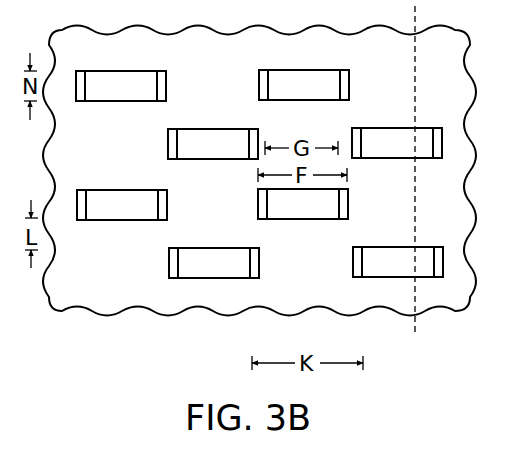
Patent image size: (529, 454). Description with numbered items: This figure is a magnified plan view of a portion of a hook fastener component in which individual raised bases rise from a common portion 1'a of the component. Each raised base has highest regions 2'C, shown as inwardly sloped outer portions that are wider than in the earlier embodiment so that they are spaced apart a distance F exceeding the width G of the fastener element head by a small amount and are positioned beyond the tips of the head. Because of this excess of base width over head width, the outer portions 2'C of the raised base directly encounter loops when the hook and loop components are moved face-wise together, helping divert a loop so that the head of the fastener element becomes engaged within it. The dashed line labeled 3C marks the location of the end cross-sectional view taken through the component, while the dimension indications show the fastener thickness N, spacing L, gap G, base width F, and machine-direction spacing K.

The circuit board / substrate 1'a is at (259, 171).
The highest regions of the raised bases 2'C is at (147, 191).
The end cross-sectional view section line 3C is at (415, 6).